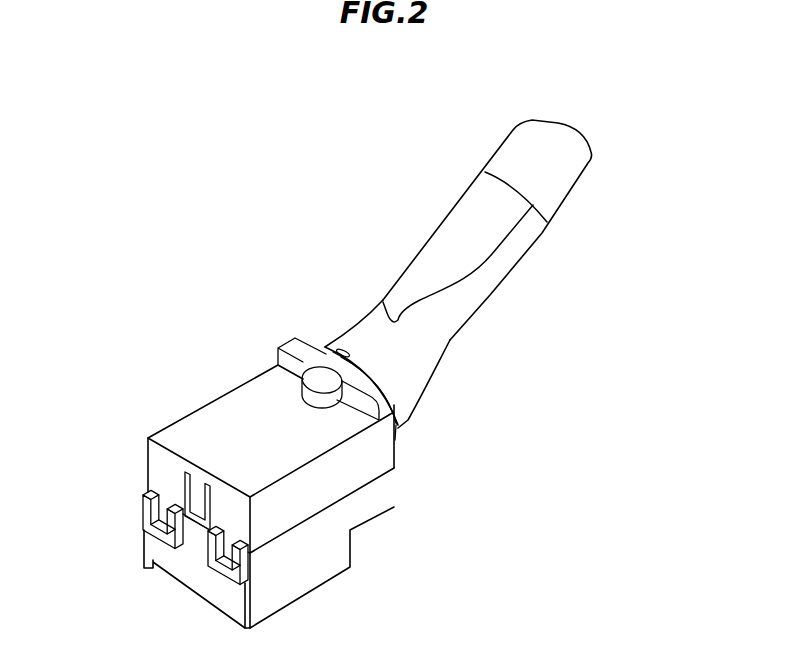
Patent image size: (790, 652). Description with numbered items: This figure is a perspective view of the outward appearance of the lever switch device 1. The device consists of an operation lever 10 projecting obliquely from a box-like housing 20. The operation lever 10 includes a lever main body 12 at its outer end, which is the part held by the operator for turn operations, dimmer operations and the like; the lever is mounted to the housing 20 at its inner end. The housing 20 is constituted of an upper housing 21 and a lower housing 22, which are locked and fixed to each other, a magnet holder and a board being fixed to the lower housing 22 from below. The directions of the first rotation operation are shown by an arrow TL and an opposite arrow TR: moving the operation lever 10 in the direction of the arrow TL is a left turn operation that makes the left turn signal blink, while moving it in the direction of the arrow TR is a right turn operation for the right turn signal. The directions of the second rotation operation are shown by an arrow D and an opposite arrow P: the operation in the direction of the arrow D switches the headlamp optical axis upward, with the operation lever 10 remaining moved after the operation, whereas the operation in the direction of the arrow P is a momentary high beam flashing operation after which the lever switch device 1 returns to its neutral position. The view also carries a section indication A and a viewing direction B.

The lever switch device 1 is at (638, 77).
The operation lever 10 is at (440, 337).
The lever main body 12 is at (440, 243).
The housing 20 is at (318, 483).
The upper housing 21 is at (370, 458).
The lower housing 22 is at (378, 495).
The arrow P is at (533, 162).
The arrow TL is at (483, 158).
The arrow TR is at (565, 217).
The arrow D is at (585, 185).
The section line A is at (622, 297).
The viewing direction B is at (202, 355).